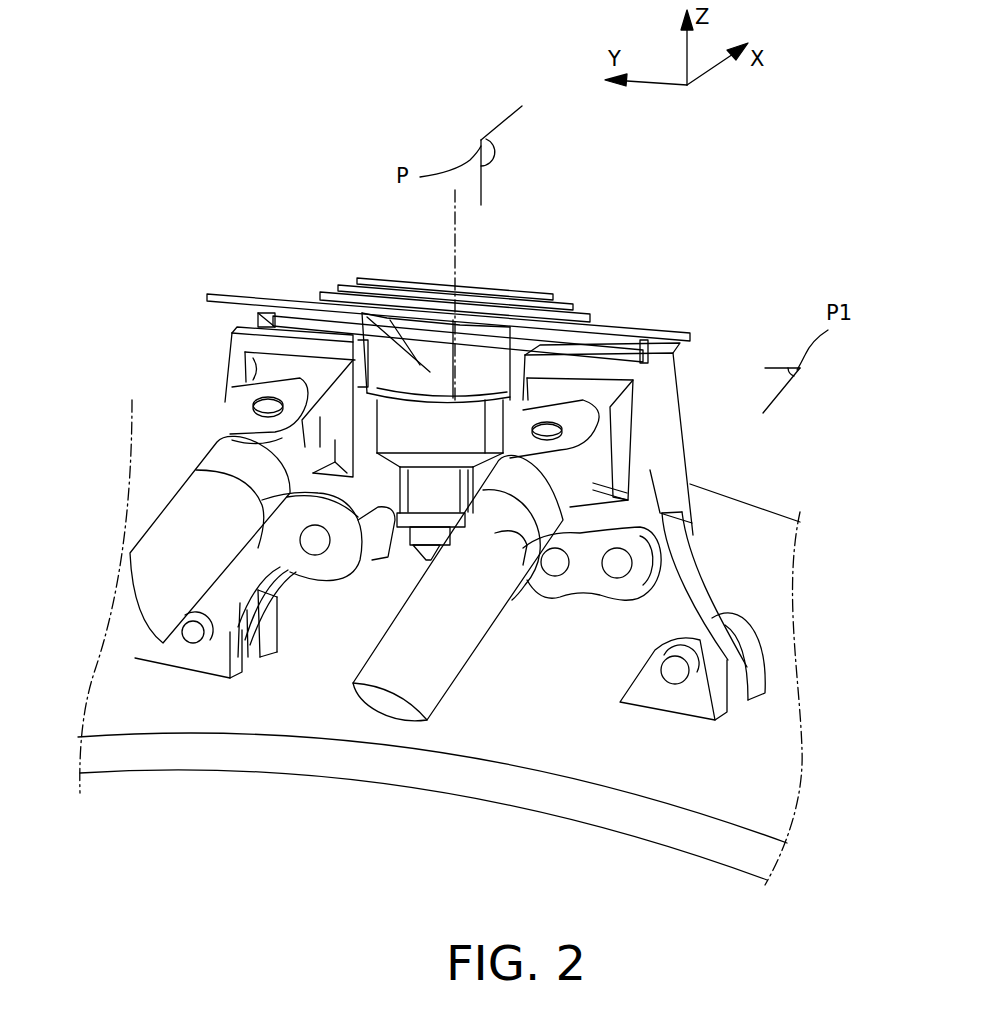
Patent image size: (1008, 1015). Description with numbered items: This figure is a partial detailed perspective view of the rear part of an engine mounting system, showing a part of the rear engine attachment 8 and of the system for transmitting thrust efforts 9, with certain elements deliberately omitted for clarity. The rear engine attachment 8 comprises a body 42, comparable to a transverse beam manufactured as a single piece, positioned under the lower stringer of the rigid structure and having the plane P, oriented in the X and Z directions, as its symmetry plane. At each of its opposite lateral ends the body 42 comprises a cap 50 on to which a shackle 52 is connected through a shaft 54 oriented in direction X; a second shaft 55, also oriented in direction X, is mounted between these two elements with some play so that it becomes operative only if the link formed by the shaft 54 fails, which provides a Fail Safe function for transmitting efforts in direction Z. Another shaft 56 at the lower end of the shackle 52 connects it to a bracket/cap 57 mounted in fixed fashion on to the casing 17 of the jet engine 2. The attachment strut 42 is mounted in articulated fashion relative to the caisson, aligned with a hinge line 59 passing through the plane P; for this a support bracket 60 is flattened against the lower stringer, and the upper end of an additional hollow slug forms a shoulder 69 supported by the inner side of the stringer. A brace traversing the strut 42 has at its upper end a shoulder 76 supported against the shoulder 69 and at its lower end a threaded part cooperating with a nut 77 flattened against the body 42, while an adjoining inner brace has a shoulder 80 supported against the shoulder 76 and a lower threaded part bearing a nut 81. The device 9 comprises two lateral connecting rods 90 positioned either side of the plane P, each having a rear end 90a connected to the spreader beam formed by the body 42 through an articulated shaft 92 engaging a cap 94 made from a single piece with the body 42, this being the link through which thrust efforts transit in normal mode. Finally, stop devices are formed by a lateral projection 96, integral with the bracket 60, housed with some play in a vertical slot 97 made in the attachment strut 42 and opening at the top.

The jet engine 2 is at (725, 862).
The rear engine attachment 8 is at (167, 335).
The system for transmitting thrust efforts 9 is at (131, 490).
The casing 17 is at (790, 770).
The body 42 is at (695, 460).
The cap 50 is at (325, 570).
The shackle 52 is at (242, 588).
The shaft 54 is at (285, 565).
The second shaft 55 is at (320, 540).
The shaft 56 is at (190, 635).
The bracket/cap 57 is at (270, 650).
The hinge line 59 is at (458, 265).
The support bracket 60 is at (263, 294).
The shoulder 69 is at (330, 295).
The shoulder 76 is at (345, 287).
The nut 77 is at (440, 538).
The shoulder 80 is at (365, 297).
The nut 81 is at (430, 562).
The lateral connecting rods for transmission of thrust efforts 90 is at (187, 515).
The rear end 90a is at (215, 460).
The articulated shaft 92 is at (254, 406).
The cap 94 is at (253, 382).
The lateral projection 96 is at (285, 335).
The vertical slot 97 is at (262, 322).